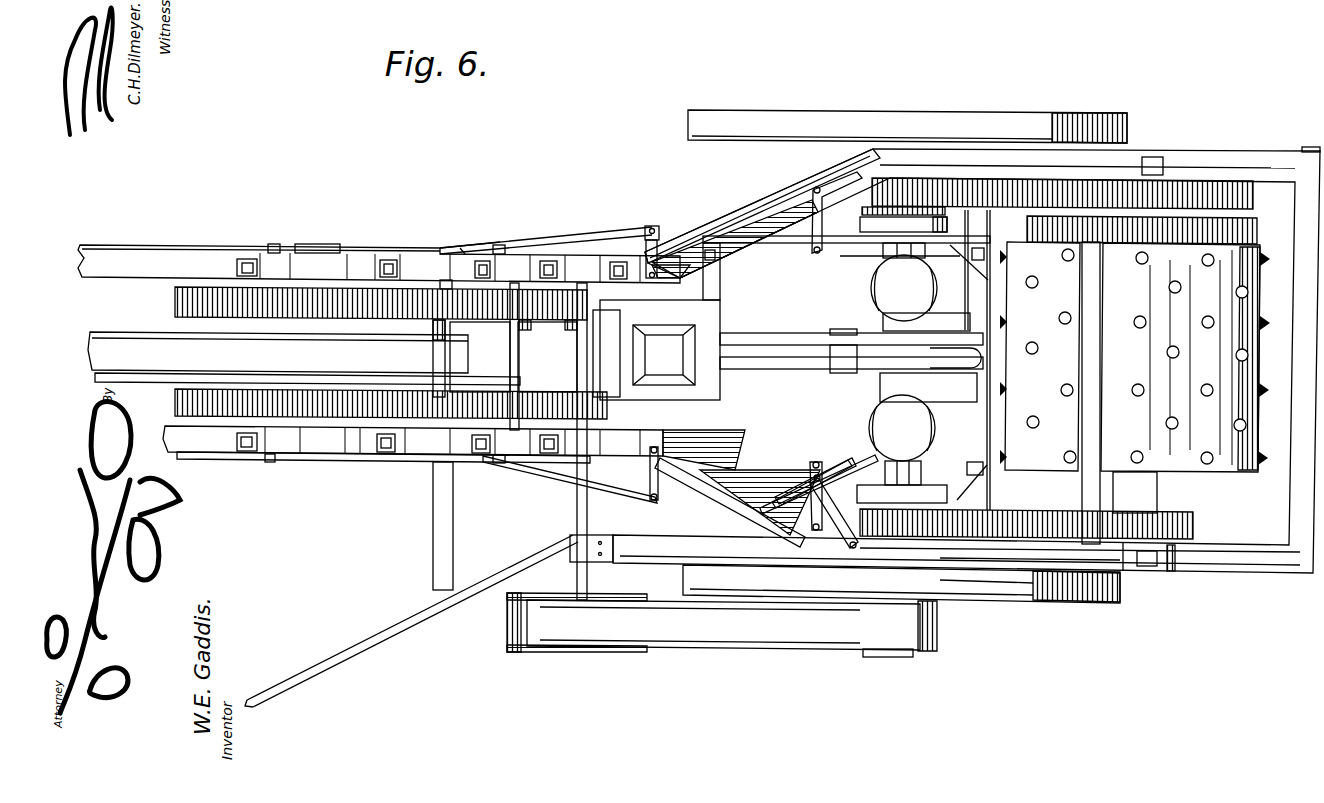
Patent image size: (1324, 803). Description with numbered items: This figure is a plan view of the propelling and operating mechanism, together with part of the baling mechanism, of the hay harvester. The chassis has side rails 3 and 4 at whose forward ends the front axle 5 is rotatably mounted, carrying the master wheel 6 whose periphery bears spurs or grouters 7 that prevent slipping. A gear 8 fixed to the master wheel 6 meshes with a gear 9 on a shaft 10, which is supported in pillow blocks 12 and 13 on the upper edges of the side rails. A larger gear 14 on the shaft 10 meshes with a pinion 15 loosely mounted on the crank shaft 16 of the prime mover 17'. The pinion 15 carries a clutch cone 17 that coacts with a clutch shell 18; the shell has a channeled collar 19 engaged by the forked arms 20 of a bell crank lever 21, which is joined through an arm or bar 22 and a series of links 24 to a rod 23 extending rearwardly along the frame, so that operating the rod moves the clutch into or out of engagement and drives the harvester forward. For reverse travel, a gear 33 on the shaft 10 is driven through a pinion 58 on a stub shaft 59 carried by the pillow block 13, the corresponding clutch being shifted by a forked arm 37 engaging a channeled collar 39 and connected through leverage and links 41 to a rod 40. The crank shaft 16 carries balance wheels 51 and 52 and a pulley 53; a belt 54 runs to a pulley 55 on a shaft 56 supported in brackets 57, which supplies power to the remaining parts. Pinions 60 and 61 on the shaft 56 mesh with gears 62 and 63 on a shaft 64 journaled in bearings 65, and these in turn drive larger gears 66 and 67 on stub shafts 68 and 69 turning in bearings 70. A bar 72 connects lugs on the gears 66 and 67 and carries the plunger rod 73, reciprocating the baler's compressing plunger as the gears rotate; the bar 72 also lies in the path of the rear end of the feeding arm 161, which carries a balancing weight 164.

The side rail 3 is at (1276, 572).
The side rail 4 is at (1196, 152).
The front axle 5 is at (1160, 490).
The master wheel 6 is at (1262, 362).
The spurs or grouters 7 is at (1032, 360).
The gear 8 is at (1240, 230).
The gear 9 is at (1180, 178).
The shaft 10 is at (1088, 573).
The pillow block 12 is at (1125, 150).
The pillow block 13 is at (1102, 603).
The gear 14 is at (1032, 190).
The pinion 15 is at (910, 205).
The crank shaft 16 is at (885, 383).
The clutch cone 17 is at (900, 162).
The prime mover 17' is at (659, 278).
The clutch shell 18 is at (950, 210).
The channeled collar 19 is at (870, 260).
The forked arms 20 is at (845, 242).
The bell crank lever 21 is at (808, 205).
The arm or bar 22 is at (680, 245).
The rod 23 is at (445, 290).
The links 24 is at (650, 235).
The gear 33 is at (1122, 603).
The forked arm 37 is at (858, 470).
The channeled collar 39 is at (812, 485).
The rod 40 is at (400, 463).
The leverage and links 41 is at (665, 485).
The balance wheel 51 is at (822, 112).
The balance wheel 52 is at (958, 603).
The pulley 53 is at (905, 657).
The belt 54 is at (828, 635).
The pulley 55 is at (590, 652).
The shaft 56 is at (770, 515).
The supporting brackets 57 is at (570, 547).
The pinion 58 is at (805, 490).
The stub shaft 59 is at (925, 485).
The pinion 60 is at (568, 392).
The pinion 61 is at (568, 290).
The gear 62 is at (487, 392).
The gear 63 is at (542, 250).
The shaft 64 is at (531, 335).
The bearings 65 is at (508, 270).
The gear 66 is at (320, 440).
The gear 67 is at (352, 300).
The stub shaft 68 is at (335, 420).
The stub shaft 69 is at (300, 278).
The bearings 70 is at (318, 258).
The bar 72 is at (452, 330).
The plunger rod 73 is at (432, 340).
The feeding arm 161 is at (178, 345).
The balancing weight 164 is at (448, 246).